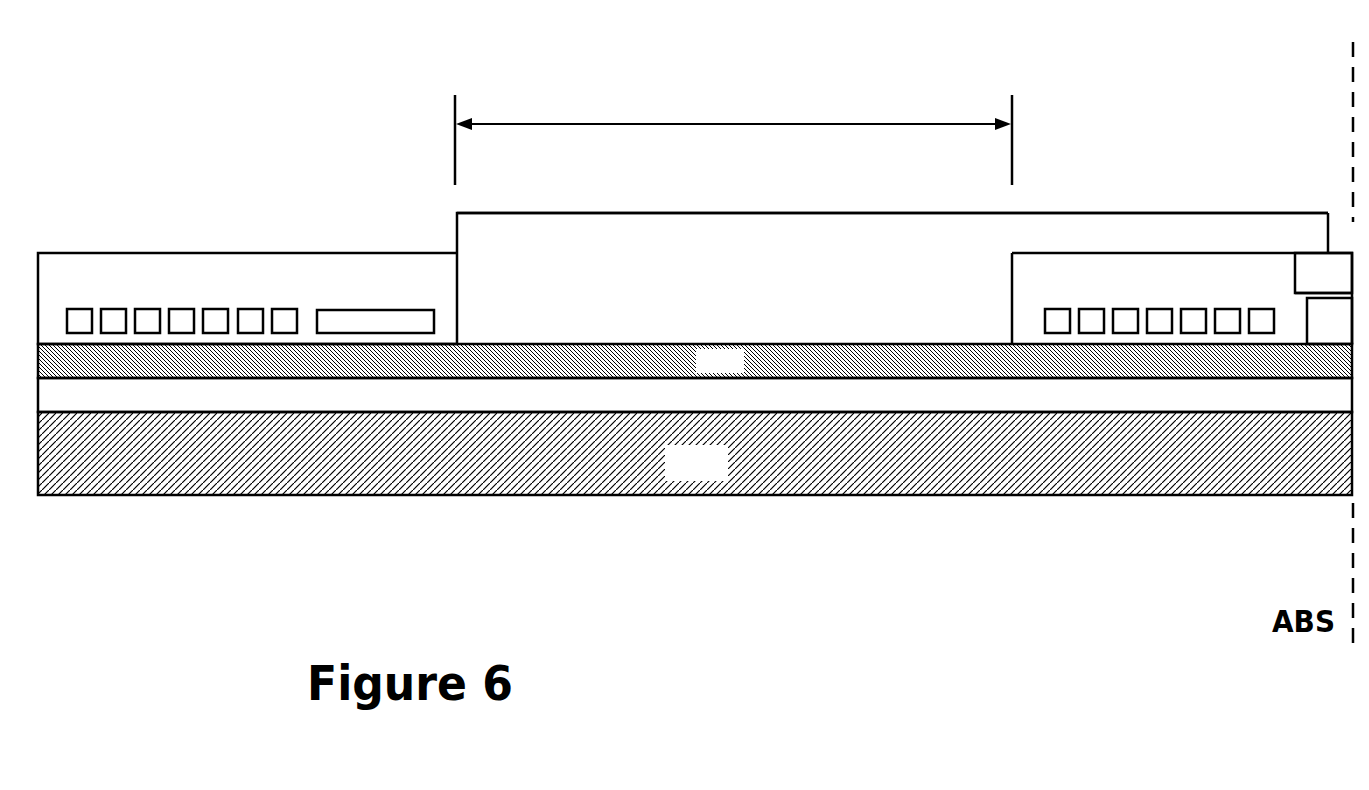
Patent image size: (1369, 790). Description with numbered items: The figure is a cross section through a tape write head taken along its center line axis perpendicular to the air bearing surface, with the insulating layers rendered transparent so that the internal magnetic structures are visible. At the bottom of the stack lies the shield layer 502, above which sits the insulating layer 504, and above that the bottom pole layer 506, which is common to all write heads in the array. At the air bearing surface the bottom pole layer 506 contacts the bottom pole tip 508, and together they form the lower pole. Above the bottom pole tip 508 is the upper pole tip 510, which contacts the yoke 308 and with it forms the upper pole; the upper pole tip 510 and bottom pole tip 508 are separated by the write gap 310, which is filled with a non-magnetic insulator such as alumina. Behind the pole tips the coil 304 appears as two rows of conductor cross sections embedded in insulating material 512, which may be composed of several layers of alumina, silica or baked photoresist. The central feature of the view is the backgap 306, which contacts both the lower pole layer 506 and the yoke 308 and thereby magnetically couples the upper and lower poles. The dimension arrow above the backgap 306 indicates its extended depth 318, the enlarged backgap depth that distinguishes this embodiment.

The coil 304 is at (183, 308).
The backgap 306 is at (755, 313).
The yoke 308 is at (1220, 229).
The write gap 310 is at (1326, 276).
The extended depth 318 is at (733, 131).
The shield layer 502 is at (722, 476).
The insulating layer 504 is at (727, 408).
The bottom pole layer 506 is at (740, 370).
The bottom pole tip 508 is at (1330, 322).
The upper pole tip 510 is at (1340, 296).
The insulating material 512 is at (317, 297).